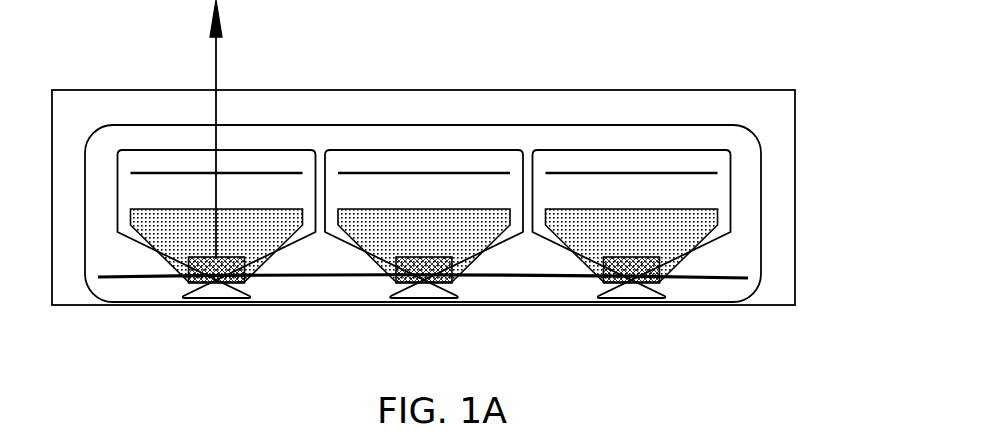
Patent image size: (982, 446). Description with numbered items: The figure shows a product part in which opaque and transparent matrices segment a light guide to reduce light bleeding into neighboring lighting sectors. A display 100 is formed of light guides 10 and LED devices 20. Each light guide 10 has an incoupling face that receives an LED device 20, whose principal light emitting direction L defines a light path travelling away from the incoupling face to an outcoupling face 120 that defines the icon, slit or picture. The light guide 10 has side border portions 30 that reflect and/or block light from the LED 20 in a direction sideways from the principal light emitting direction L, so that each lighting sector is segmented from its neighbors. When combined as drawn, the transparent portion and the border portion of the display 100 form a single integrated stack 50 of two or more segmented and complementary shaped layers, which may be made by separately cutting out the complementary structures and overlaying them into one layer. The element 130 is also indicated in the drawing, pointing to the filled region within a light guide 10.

The display 100 is at (762, 66).
The single integrated stack 50 is at (795, 157).
The side border portions 30 is at (527, 140).
The outcoupling face 120 is at (633, 173).
The encapsulant 130 is at (670, 227).
The light guide 10 is at (558, 246).
The LED device 20 is at (630, 270).
The principal light emitting direction L is at (216, 58).